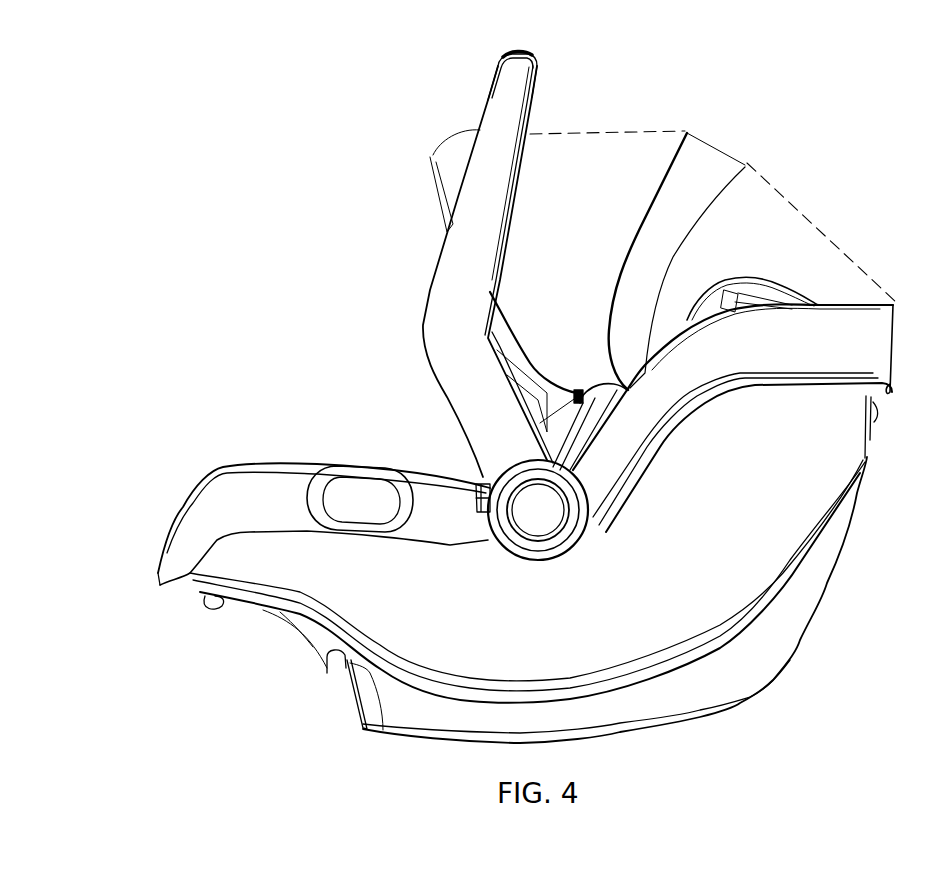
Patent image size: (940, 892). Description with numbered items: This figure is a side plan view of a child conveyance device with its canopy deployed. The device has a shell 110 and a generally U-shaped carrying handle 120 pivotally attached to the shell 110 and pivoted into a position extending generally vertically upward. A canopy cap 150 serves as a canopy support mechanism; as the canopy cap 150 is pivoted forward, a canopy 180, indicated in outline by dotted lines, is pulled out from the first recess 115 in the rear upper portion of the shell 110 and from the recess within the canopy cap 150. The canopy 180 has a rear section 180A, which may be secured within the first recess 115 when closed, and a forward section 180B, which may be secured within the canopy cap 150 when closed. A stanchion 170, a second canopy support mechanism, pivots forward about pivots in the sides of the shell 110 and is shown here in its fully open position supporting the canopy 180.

The shell 110 is at (673, 554).
The first recess 115 is at (822, 351).
The carrying handle 120 is at (431, 328).
The canopy cap 150 is at (443, 170).
The stanchion 170 is at (698, 163).
The canopy 180 is at (725, 169).
The rear section of the canopy 180A is at (833, 247).
The forward section of the canopy 180B is at (595, 133).